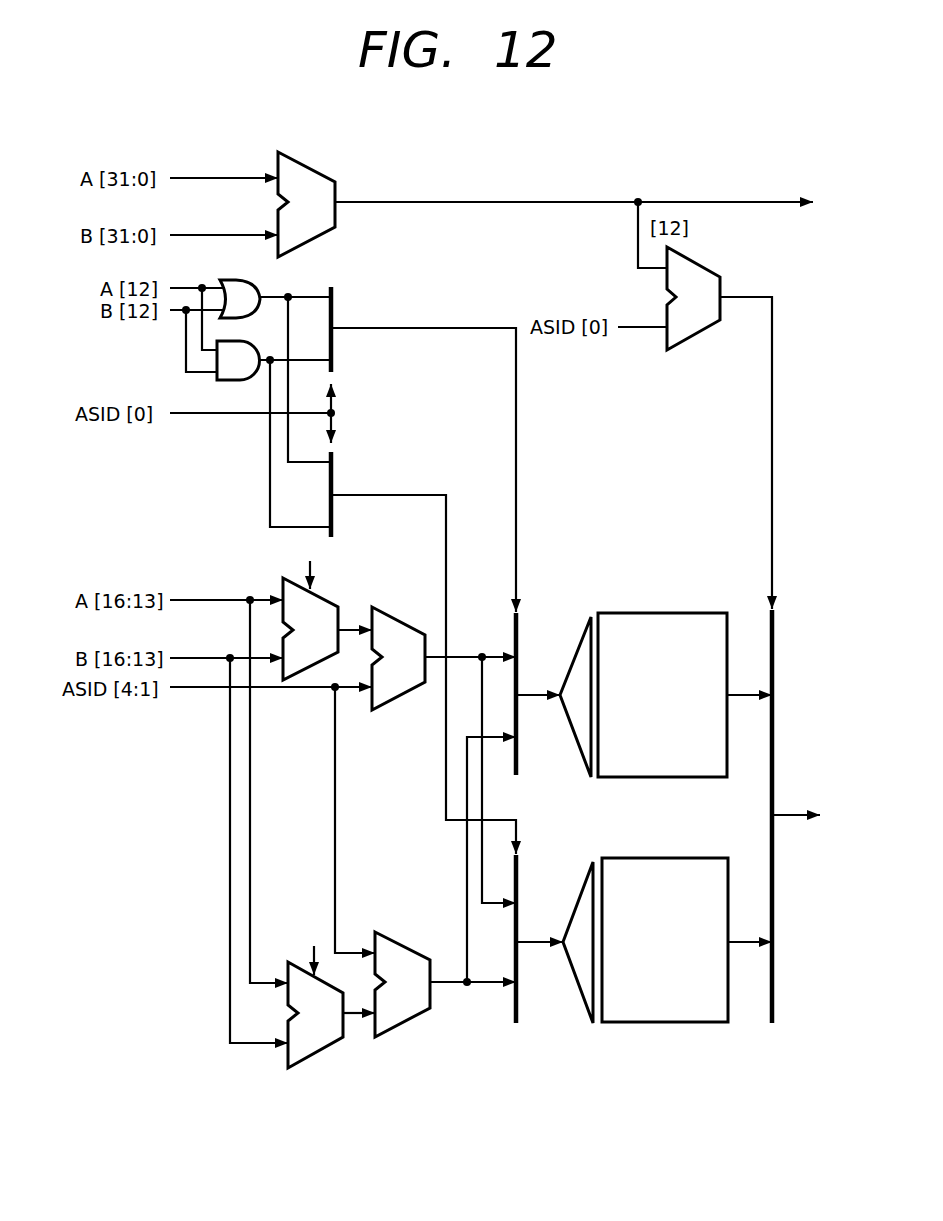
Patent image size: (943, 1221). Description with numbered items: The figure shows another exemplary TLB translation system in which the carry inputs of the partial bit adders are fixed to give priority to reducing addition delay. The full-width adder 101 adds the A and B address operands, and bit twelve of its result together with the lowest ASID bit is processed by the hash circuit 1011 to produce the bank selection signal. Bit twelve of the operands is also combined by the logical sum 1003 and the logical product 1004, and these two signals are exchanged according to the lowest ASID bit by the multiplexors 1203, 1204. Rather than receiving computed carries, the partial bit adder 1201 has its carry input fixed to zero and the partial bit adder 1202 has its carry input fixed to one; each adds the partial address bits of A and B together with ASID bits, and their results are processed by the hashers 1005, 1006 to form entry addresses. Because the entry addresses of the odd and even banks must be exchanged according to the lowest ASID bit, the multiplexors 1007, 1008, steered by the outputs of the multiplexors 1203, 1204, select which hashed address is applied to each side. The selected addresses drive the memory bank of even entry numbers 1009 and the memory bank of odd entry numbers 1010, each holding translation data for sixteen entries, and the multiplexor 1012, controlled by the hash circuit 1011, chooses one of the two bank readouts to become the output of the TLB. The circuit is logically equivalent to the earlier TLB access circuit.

The adder 101 is at (312, 168).
The logical sum 1003 is at (224, 283).
The logical product 1004 is at (233, 384).
The multiplexor 1203 is at (336, 306).
The multiplexor 1204 is at (336, 467).
The hash circuit 1011 is at (704, 267).
The partial bit adder with Cin fixed to 0 1201 is at (337, 580).
The partial bit adder with Cin fixed to 1 1202 is at (318, 1054).
The hasher 1005 is at (406, 608).
The hasher 1006 is at (407, 938).
The multiplexor 1007 is at (520, 632).
The multiplexor 1008 is at (520, 878).
The memory bank of even entry numbers 1009 is at (668, 612).
The memory bank of odd entry numbers 1010 is at (670, 858).
The multiplexor 1012 is at (778, 656).